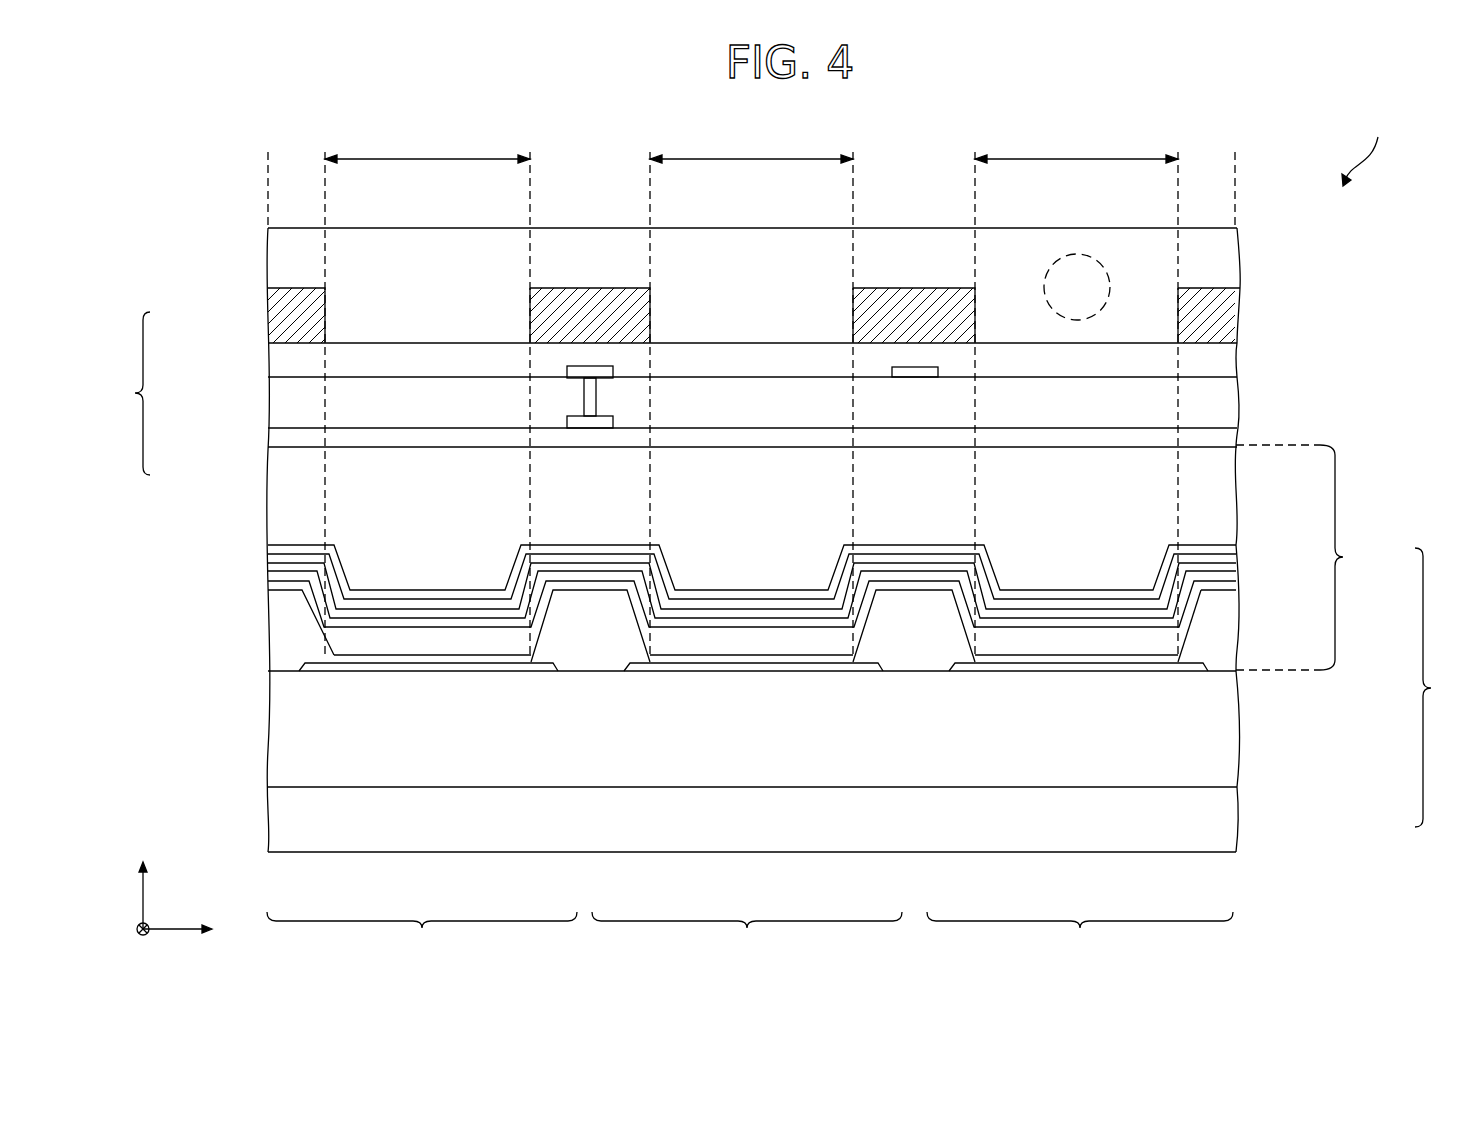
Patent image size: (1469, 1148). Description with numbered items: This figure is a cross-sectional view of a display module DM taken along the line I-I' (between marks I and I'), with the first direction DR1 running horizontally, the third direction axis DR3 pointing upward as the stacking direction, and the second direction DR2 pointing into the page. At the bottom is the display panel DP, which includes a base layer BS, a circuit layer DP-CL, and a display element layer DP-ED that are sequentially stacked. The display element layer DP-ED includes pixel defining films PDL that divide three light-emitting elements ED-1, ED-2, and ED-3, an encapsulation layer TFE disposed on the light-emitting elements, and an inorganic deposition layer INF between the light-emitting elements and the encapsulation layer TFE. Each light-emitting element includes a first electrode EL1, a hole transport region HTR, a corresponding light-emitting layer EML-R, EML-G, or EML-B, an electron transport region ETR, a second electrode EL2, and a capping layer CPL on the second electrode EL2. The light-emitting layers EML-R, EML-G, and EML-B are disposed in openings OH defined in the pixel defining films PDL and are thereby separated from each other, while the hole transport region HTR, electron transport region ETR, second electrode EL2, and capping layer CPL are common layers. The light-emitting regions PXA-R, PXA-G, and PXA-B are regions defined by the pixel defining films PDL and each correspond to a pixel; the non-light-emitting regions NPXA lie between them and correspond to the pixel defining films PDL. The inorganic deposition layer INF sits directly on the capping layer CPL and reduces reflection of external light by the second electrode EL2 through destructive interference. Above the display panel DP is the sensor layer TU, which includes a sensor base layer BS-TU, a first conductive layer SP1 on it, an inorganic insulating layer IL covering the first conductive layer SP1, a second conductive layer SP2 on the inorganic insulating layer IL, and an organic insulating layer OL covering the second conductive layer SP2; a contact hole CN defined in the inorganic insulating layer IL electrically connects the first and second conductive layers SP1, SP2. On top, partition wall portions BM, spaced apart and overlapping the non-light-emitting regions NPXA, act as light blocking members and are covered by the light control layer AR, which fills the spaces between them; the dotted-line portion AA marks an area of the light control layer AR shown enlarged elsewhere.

The non-light-emitting region NPXA is at (1235, 159).
The light-emitting region PXA-R is at (427, 147).
The light-emitting region PXA-G is at (751, 147).
The light-emitting region PXA-B is at (1076, 147).
The display module DM is at (1367, 148).
The portion indicated by dotted line AA is at (1077, 254).
The light control layer AR is at (1228, 256).
The partition wall portion BM is at (1227, 317).
The second conductive layer SP2 is at (603, 373).
The organic insulating layer OL is at (278, 361).
The contact hole CN is at (585, 393).
The first conductive layer SP1 is at (577, 423).
The inorganic insulating layer IL is at (277, 417).
The sensor base layer BS-TU is at (277, 437).
The sensor layer TU is at (128, 393).
The encapsulation layer TFE is at (1225, 477).
The inorganic deposition layer INF is at (1225, 549).
The display element layer DP-ED is at (1324, 557).
The opening OH is at (1200, 600).
The pixel defining film PDL is at (1230, 637).
The circuit layer DP-CL is at (1227, 725).
The display panel DP is at (1439, 687).
The base layer BS is at (1223, 813).
The first electrode EL1 is at (313, 667).
The hole transport region HTR is at (346, 659).
The light-emitting layer EML-R is at (383, 643).
The light-emitting layer EML-G is at (708, 643).
The light-emitting layer EML-B is at (1033, 643).
The electron transport region ETR is at (413, 624).
The second electrode EL2 is at (449, 613).
The capping layer CPL is at (484, 603).
The light-emitting element ED-1 is at (422, 935).
The light-emitting element ED-2 is at (747, 935).
The light-emitting element ED-3 is at (1080, 935).
The first direction DR1 is at (198, 930).
The second direction DR2 is at (143, 943).
The third direction axis DR3 is at (143, 883).
The line I-I' I is at (268, 871).
The line I- I' is at (1240, 871).